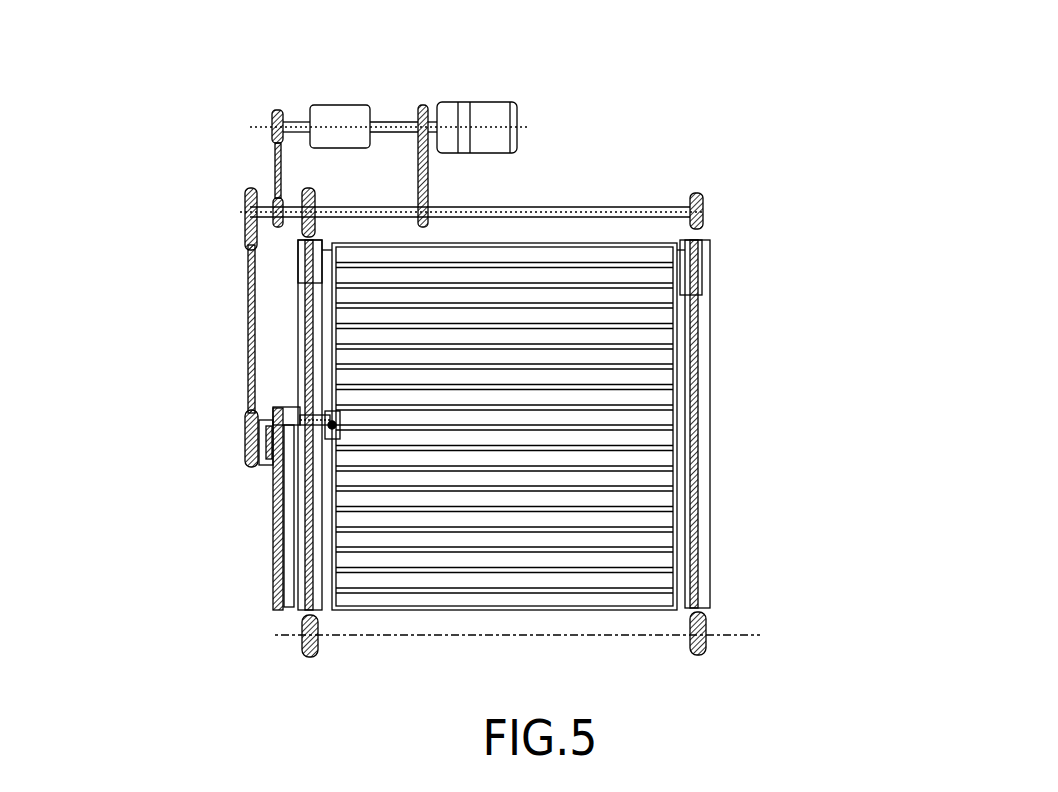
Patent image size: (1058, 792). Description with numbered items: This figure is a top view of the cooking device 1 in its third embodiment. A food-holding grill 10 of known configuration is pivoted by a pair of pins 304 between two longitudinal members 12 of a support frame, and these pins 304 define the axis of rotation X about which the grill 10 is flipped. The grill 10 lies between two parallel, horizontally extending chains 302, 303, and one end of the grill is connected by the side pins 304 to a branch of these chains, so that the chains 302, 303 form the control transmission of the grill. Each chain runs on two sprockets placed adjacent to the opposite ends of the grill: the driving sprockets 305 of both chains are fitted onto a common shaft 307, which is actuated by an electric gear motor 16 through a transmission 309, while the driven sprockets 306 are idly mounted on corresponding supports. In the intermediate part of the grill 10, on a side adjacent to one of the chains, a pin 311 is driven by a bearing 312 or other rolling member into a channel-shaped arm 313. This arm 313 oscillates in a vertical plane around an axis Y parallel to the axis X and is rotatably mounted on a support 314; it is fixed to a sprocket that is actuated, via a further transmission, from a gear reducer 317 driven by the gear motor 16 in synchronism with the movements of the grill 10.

The cooking device 1 is at (868, 412).
The food-holding grill 10 is at (600, 305).
The longitudinal members 12 is at (297, 288).
The electric gear motor 16 is at (480, 100).
The chain 302 is at (296, 350).
The chain 303 is at (708, 465).
The pins 304 is at (697, 190).
The driving sprockets 305 is at (305, 195).
The driven sprockets 306 is at (296, 650).
The shaft 307 is at (572, 207).
The transmission 309 is at (405, 110).
The pin 311 is at (287, 473).
The bearing 312 is at (273, 405).
The channel-shaped arm 313 is at (280, 590).
The support 314 is at (247, 465).
The gear reducer 317 is at (340, 107).
The axis of rotation X is at (705, 213).
The axis Y is at (248, 443).